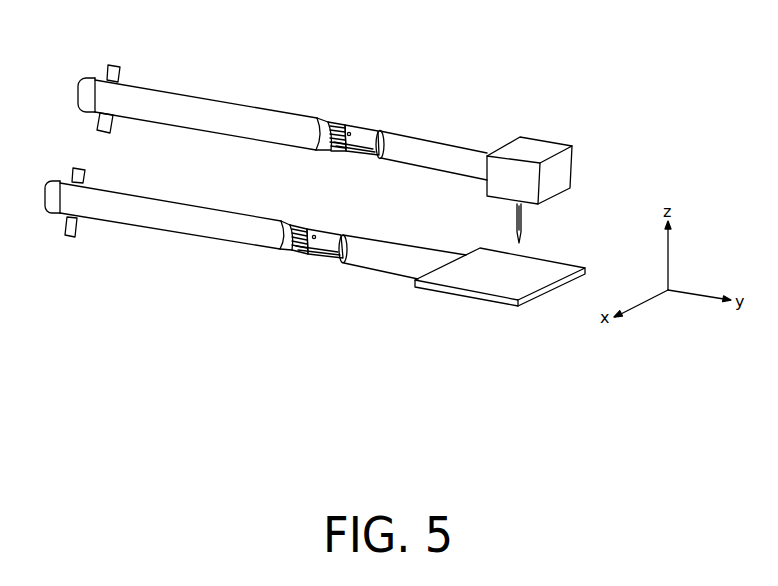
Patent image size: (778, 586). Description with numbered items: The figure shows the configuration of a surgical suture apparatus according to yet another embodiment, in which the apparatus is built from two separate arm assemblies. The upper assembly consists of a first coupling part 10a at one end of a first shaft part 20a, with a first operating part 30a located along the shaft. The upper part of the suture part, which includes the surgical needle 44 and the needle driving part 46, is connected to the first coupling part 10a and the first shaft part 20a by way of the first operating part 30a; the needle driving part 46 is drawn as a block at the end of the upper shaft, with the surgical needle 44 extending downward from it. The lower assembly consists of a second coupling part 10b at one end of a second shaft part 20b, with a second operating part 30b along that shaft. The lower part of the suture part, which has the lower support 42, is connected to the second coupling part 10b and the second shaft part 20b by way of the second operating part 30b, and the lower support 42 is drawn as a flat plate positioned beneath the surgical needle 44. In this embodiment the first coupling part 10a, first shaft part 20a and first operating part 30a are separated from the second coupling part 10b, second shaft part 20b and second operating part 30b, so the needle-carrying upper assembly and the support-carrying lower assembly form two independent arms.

The first coupling part 10a is at (115, 64).
The first shaft part 20a is at (222, 102).
The first operating part 30a is at (345, 124).
The second coupling part 10b is at (67, 237).
The second shaft part 20b is at (168, 235).
The second operating part 30b is at (307, 257).
The lower support 42 is at (465, 295).
The surgical needle 44 is at (528, 223).
The needle driving part 46 is at (541, 140).